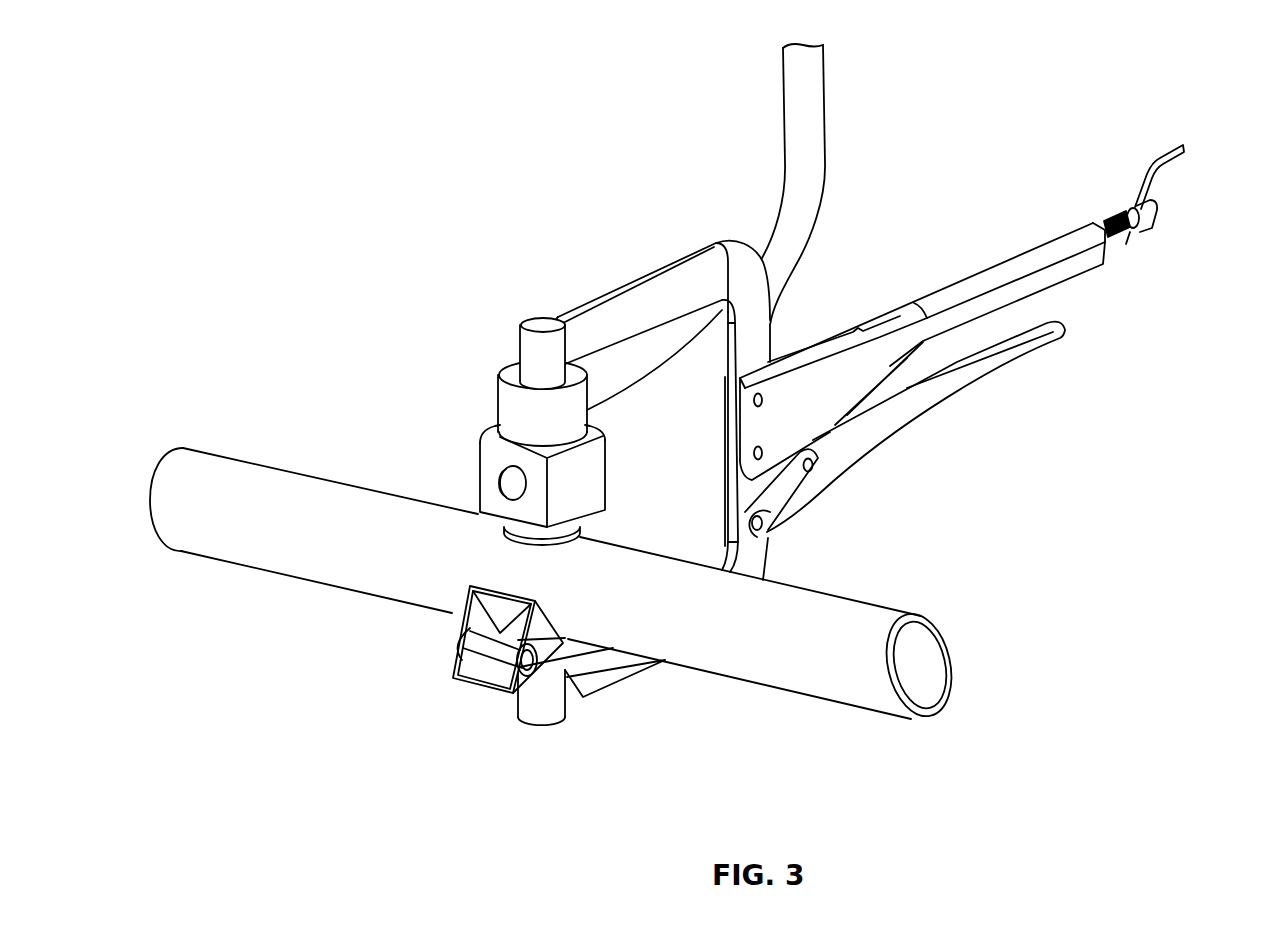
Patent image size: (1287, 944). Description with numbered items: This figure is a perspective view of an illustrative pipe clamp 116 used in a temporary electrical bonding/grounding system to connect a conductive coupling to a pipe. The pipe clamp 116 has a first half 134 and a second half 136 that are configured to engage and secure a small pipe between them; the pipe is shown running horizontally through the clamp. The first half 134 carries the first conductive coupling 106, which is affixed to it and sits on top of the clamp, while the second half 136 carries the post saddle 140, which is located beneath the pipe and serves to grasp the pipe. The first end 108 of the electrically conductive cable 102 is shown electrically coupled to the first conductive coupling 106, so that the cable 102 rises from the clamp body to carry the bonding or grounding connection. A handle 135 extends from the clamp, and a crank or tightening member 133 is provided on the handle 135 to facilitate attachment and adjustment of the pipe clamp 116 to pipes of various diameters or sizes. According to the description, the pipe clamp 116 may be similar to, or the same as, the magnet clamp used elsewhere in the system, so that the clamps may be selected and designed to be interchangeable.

The electrically conductive cable 102 is at (812, 118).
The first conductive coupling 106 is at (470, 460).
The first end of the electrically conductive cable 108 is at (633, 418).
The pipe clamp 116 is at (935, 447).
The crank or tightening member 133 is at (1172, 135).
The first half 134 is at (637, 278).
The handle 135 is at (1007, 273).
The second half 136 is at (588, 677).
The post saddle 140 is at (450, 667).